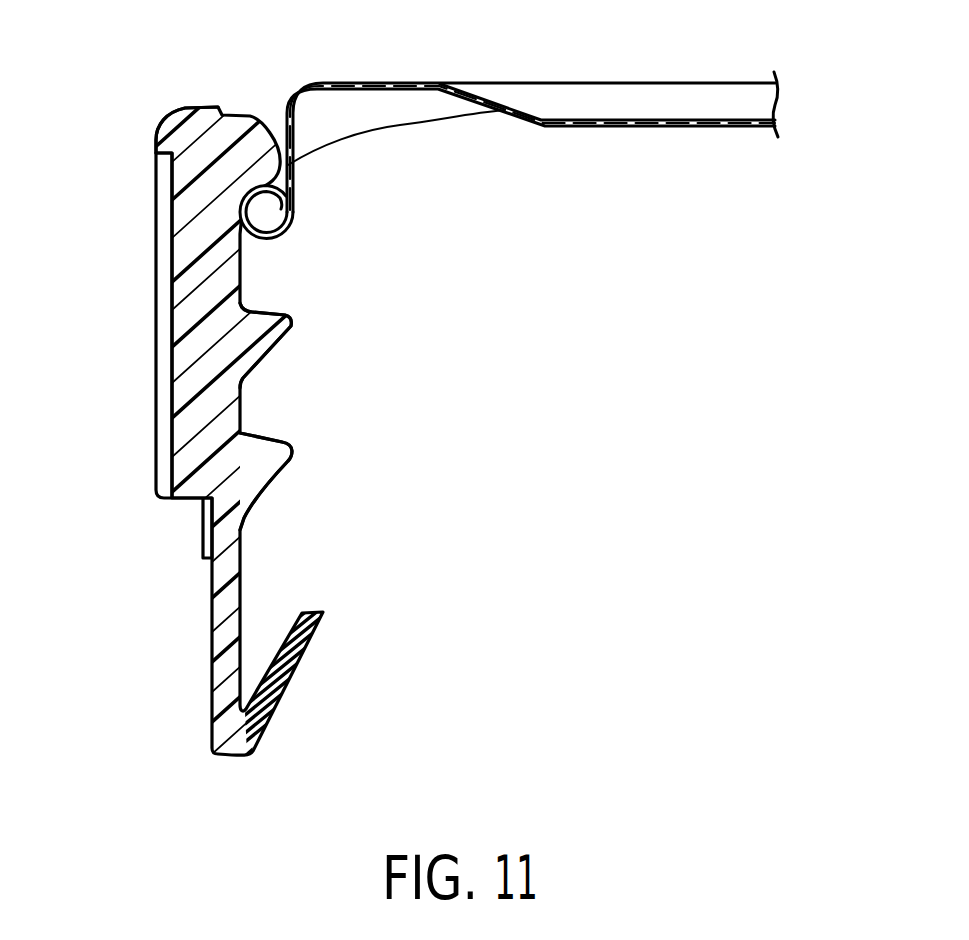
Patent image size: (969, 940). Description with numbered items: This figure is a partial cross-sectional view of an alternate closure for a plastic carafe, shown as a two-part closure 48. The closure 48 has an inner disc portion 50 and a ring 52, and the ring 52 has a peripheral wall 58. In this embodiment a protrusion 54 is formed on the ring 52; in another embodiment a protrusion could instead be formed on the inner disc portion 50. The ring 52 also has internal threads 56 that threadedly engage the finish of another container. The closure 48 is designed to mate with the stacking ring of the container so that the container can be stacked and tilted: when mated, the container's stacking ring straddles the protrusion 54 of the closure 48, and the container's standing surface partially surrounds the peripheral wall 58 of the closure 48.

The closure 48 is at (228, 443).
The inner disc portion 50 is at (400, 84).
The ring 52 is at (156, 383).
The protrusion 54 is at (205, 107).
The internal threads 56 is at (272, 348).
The peripheral wall 58 is at (159, 138).